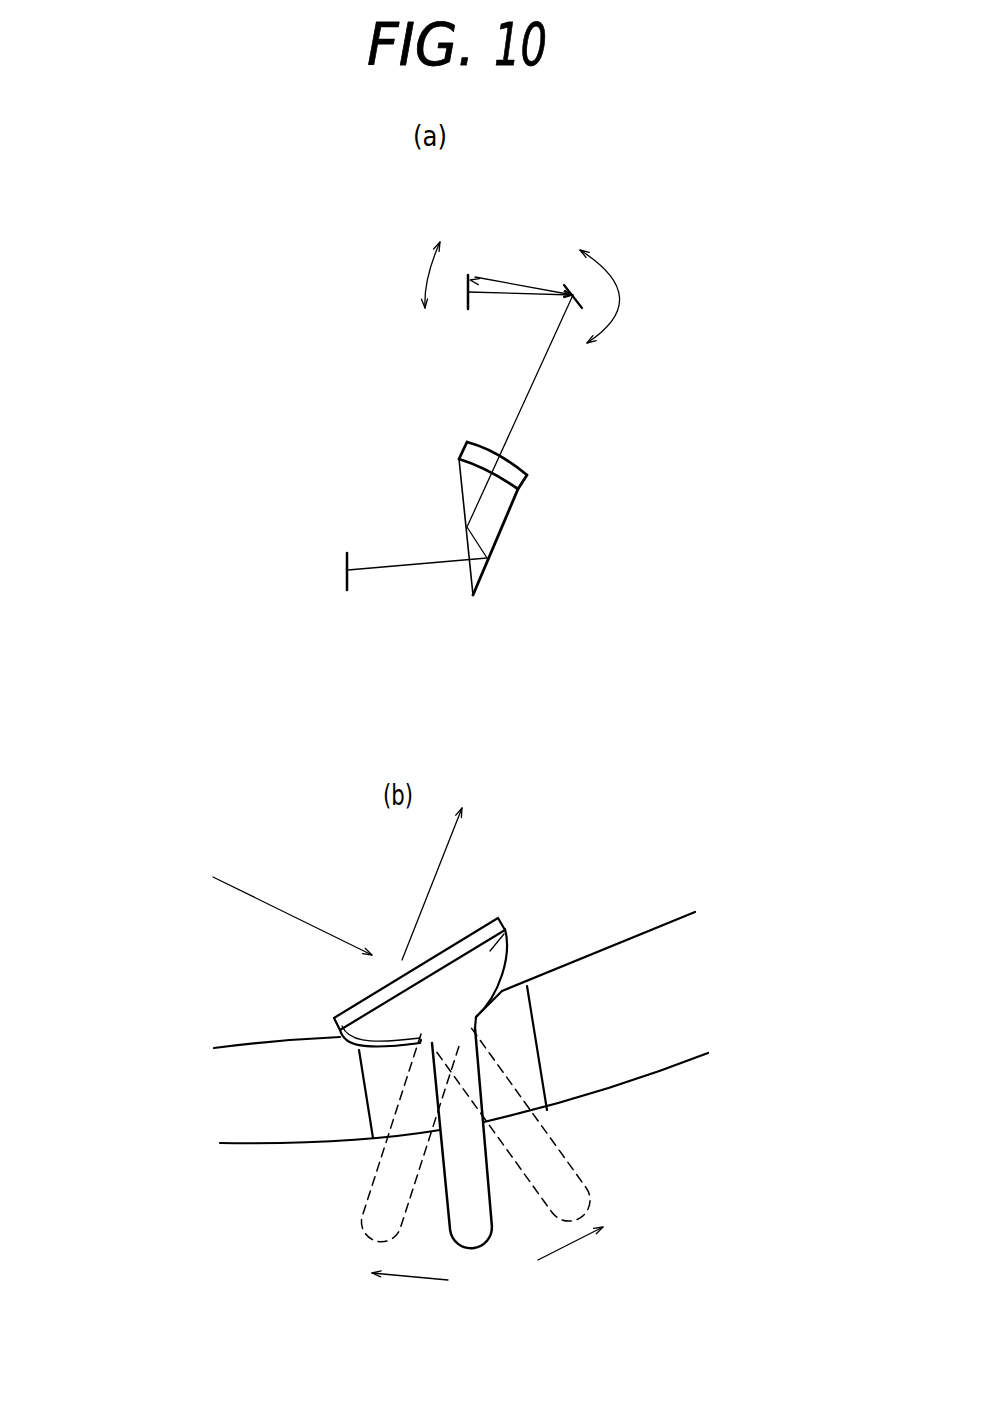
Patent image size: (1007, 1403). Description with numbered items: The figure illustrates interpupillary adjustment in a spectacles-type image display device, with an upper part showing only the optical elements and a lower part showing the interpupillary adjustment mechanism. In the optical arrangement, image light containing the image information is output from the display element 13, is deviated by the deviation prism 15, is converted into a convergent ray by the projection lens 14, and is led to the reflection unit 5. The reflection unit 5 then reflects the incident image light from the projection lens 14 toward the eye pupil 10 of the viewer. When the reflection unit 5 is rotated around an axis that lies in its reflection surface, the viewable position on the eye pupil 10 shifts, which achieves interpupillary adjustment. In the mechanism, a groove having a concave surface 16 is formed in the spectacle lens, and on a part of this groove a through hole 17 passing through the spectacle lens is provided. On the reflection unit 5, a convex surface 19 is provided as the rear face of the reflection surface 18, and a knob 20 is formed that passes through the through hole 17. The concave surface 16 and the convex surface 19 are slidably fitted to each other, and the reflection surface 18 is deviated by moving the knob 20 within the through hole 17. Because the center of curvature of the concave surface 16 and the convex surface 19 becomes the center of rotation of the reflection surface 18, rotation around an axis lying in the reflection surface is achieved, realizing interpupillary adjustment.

The reflection unit 5 is at (571, 290).
The eye pupil 10 is at (469, 272).
The display element 13 is at (344, 555).
The projection lens 14 is at (526, 481).
The deviation prism 15 is at (503, 533).
The concave surface 16 is at (345, 1043).
The through hole 17 is at (377, 1087).
The reflection surface 18 is at (458, 933).
The convex surface 19 is at (363, 1038).
The knob 20 is at (477, 1230).